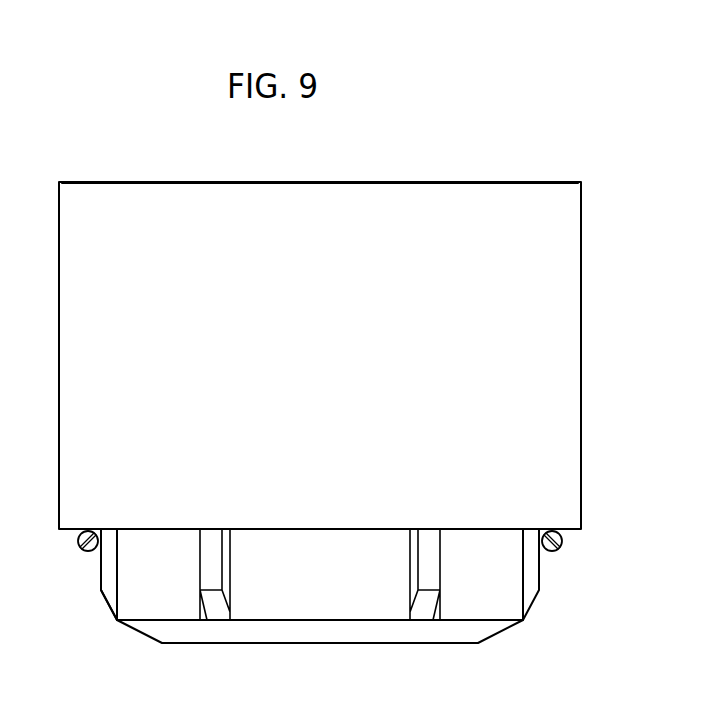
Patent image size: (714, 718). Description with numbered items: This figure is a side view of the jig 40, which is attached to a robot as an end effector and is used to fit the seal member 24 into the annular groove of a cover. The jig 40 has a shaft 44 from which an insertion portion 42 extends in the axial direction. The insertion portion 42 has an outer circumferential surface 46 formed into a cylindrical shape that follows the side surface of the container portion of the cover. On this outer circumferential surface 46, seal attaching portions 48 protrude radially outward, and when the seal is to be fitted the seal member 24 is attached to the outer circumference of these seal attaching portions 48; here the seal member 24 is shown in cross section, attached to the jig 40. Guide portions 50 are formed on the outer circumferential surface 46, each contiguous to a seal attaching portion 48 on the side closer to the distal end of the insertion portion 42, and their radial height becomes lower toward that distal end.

The jig 40 is at (551, 163).
The shaft 44 is at (460, 181).
The outer circumferential surface 46 is at (470, 608).
The seal attaching portion 48 is at (100, 572).
The guide portion 50 is at (102, 600).
The insertion portion 42 is at (292, 644).
The seal member 24 is at (560, 549).